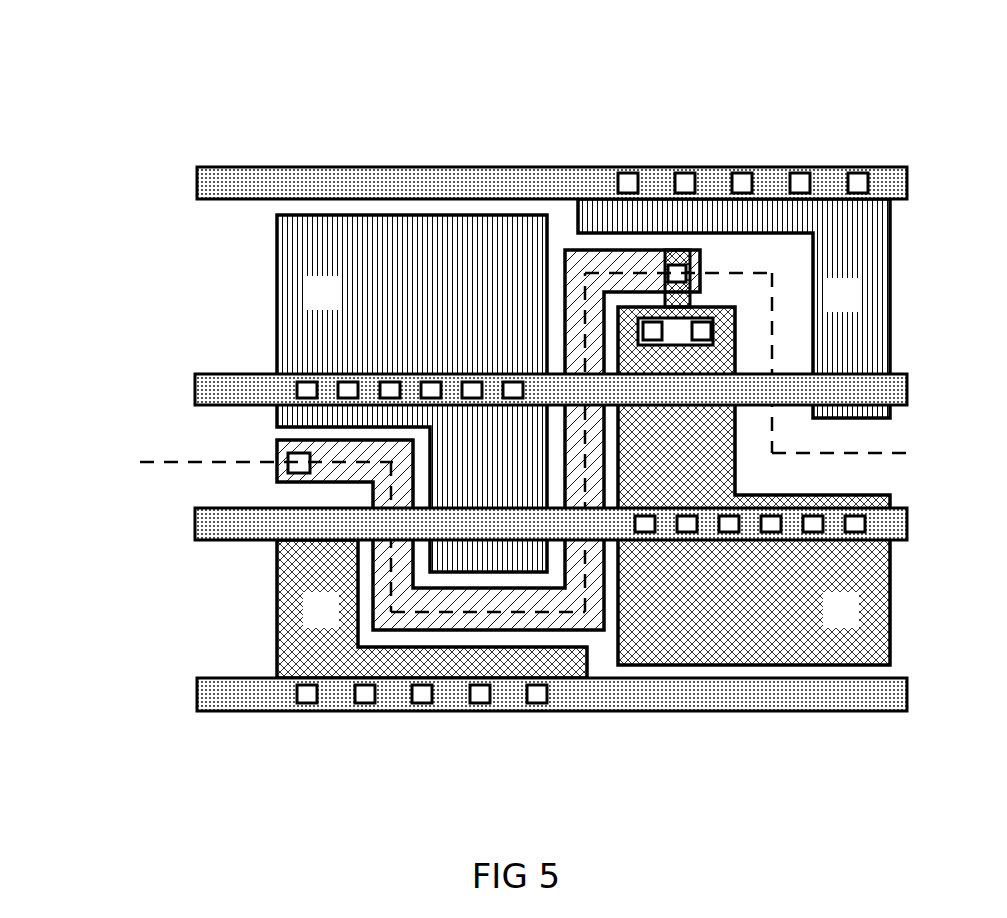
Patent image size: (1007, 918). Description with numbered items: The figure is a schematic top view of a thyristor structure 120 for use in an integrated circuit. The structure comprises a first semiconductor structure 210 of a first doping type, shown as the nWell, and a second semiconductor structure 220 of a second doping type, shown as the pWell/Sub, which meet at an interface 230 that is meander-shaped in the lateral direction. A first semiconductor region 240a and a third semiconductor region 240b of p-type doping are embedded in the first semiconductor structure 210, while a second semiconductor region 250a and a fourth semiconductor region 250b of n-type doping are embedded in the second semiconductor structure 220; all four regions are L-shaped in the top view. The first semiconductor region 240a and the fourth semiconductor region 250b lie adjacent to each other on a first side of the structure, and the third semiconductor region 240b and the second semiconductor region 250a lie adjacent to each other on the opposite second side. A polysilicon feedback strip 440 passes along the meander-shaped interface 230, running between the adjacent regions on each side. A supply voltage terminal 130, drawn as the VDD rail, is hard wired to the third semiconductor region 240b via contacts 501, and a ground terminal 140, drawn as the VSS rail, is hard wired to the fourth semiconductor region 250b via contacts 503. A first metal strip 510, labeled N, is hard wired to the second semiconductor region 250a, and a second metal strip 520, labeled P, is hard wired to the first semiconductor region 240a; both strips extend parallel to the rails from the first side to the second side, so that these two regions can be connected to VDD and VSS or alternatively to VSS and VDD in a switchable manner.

The thyristor structure 120 is at (877, 101).
The supply voltage terminal 130 is at (523, 151).
The ground terminal 140 is at (525, 731).
The first semiconductor structure 210 is at (532, 385).
The second semiconductor structure 220 is at (524, 561).
The interface 230 is at (505, 504).
The first semiconductor region 240a is at (287, 228).
The third semiconductor region 240b is at (905, 215).
The second semiconductor region 250a is at (883, 622).
The fourth semiconductor region 250b is at (572, 668).
The polysilicon feedback strip 440 is at (450, 614).
The contacts of the supply voltage rail 501 is at (642, 174).
The contacts of the ground rail 503 is at (375, 712).
The first metal strip 510 is at (228, 541).
The second metal strip 520 is at (220, 375).